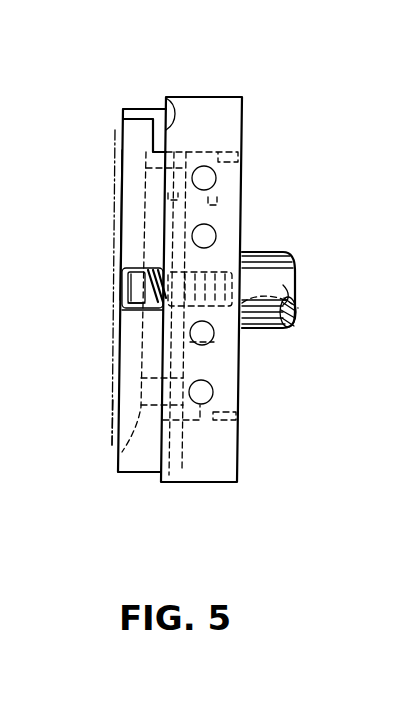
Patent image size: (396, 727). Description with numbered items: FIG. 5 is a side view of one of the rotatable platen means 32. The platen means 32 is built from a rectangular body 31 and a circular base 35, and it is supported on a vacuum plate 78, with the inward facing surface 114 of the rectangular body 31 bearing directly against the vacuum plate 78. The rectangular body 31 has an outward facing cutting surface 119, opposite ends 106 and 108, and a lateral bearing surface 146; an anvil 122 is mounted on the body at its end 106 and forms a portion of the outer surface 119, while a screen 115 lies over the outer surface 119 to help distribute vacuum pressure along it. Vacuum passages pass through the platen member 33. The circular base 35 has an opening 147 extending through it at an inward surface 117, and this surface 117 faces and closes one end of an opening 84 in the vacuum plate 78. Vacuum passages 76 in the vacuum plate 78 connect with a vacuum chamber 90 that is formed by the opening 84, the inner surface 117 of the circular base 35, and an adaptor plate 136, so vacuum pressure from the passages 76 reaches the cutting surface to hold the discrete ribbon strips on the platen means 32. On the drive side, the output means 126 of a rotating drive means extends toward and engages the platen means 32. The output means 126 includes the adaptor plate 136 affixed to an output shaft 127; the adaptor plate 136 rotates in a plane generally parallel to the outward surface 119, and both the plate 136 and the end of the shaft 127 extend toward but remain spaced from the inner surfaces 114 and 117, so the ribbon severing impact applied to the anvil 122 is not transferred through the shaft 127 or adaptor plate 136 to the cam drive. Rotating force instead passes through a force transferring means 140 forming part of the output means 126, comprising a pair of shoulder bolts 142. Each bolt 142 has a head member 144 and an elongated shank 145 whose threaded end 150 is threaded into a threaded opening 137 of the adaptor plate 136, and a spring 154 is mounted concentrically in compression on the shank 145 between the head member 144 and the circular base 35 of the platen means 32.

The rectangular body 31 is at (114, 168).
The platen means 32 is at (100, 138).
The platen member 33 is at (142, 468).
The circular base 35 is at (190, 424).
The vacuum passages 76 is at (212, 228).
The vacuum plate 78 is at (219, 97).
The opening 84 is at (240, 162).
The vacuum chamber 90 is at (198, 160).
The end 106 is at (130, 110).
The end 108 is at (128, 476).
The inward facing surface 114 is at (167, 97).
The screen 115 is at (113, 428).
The inward surface 117 is at (215, 368).
The outward facing cutting surface 119 is at (122, 195).
The anvil 122 is at (148, 109).
The output means 126 is at (297, 252).
The output shaft 127 is at (283, 285).
The adaptor plate 136 is at (222, 187).
The threaded opening 137 is at (300, 318).
The force transferring means 140 is at (122, 284).
The shoulder bolt 142 is at (127, 270).
The head member 144 is at (137, 303).
The elongated shank 145 is at (210, 345).
The lateral bearing surface 146 is at (122, 303).
The opening 147 is at (185, 263).
The threaded end 150 is at (243, 338).
The spring 154 is at (150, 262).